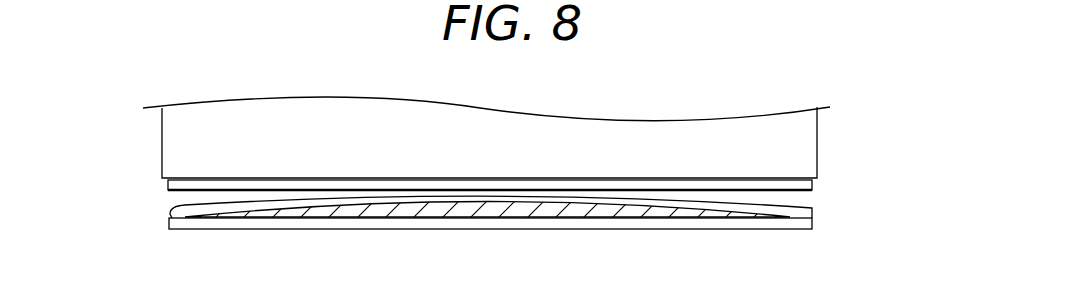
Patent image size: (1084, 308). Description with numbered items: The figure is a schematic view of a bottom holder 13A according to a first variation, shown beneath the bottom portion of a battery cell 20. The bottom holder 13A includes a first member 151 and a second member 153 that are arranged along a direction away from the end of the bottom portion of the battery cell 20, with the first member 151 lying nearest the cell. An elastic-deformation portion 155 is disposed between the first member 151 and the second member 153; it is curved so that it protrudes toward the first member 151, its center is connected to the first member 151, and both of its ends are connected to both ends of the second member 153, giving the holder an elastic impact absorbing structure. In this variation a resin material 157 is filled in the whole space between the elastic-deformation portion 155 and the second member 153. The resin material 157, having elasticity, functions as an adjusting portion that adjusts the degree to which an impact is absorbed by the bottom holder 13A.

The battery cell 20 is at (807, 147).
The first member 151 is at (167, 187).
The second member 153 is at (168, 223).
The elastic-deformation portion 155 is at (168, 212).
The resin material 157 is at (525, 210).
The bottom holder 13A is at (827, 203).